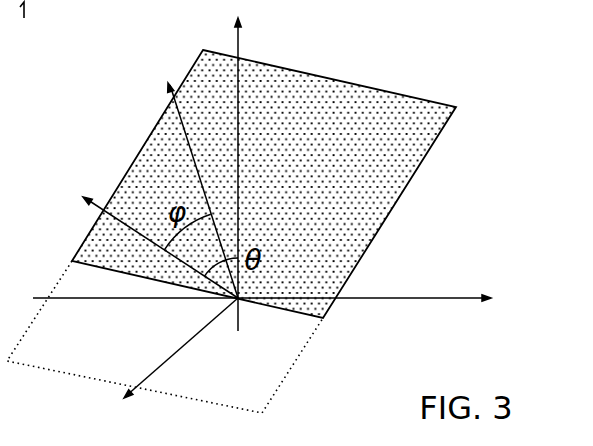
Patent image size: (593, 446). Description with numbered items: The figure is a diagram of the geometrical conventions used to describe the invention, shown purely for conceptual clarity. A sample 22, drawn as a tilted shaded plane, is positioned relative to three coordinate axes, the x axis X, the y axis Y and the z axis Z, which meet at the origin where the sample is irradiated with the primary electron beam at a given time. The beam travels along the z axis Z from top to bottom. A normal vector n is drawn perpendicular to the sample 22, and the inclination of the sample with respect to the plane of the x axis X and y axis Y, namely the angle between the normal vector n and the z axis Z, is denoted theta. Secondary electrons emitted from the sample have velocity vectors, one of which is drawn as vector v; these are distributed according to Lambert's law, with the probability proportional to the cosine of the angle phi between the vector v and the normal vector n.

The sample 22 is at (431, 148).
The x axis X is at (273, 310).
The y axis Y is at (180, 360).
The z axis Z is at (249, 165).
The normal vector n is at (151, 239).
The velocity vector of secondary electrons v is at (194, 184).